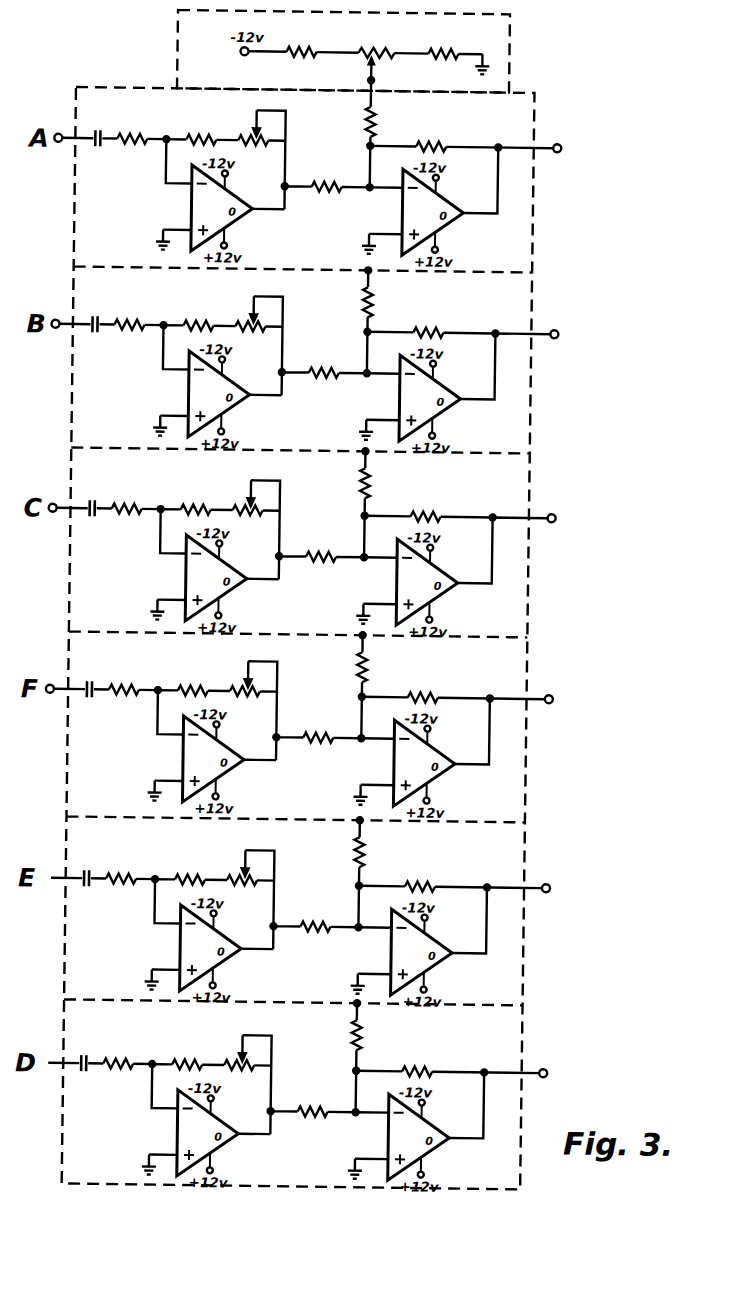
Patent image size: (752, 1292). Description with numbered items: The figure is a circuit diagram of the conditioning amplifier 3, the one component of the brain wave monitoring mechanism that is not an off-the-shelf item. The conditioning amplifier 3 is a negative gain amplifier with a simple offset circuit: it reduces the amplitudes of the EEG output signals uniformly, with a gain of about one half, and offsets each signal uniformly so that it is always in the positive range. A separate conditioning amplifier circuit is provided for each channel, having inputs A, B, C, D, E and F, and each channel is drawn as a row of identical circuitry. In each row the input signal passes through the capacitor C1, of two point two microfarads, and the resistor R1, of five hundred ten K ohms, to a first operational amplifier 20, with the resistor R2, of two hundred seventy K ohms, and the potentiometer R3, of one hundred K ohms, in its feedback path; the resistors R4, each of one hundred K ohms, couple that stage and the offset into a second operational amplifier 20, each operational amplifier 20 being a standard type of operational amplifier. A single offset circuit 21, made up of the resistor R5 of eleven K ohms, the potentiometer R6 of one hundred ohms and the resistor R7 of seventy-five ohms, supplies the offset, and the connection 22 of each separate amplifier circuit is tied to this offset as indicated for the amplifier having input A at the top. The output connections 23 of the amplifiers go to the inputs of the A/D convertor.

The conditioning amplifier 3 is at (560, 80).
The operational amplifier 20 is at (332, 675).
The offset circuit 21 is at (509, 42).
The connection 22 is at (387, 550).
The output connection 23 is at (568, 601).
The resistor R1 is at (125, 592).
The resistor R2 is at (194, 592).
The potentiometer R3 is at (246, 603).
The resistor R4 is at (371, 612).
The resistor R5 is at (301, 42).
The potentiometer R6 is at (376, 53).
The resistor R7 is at (443, 43).
The capacitor C1 is at (91, 592).